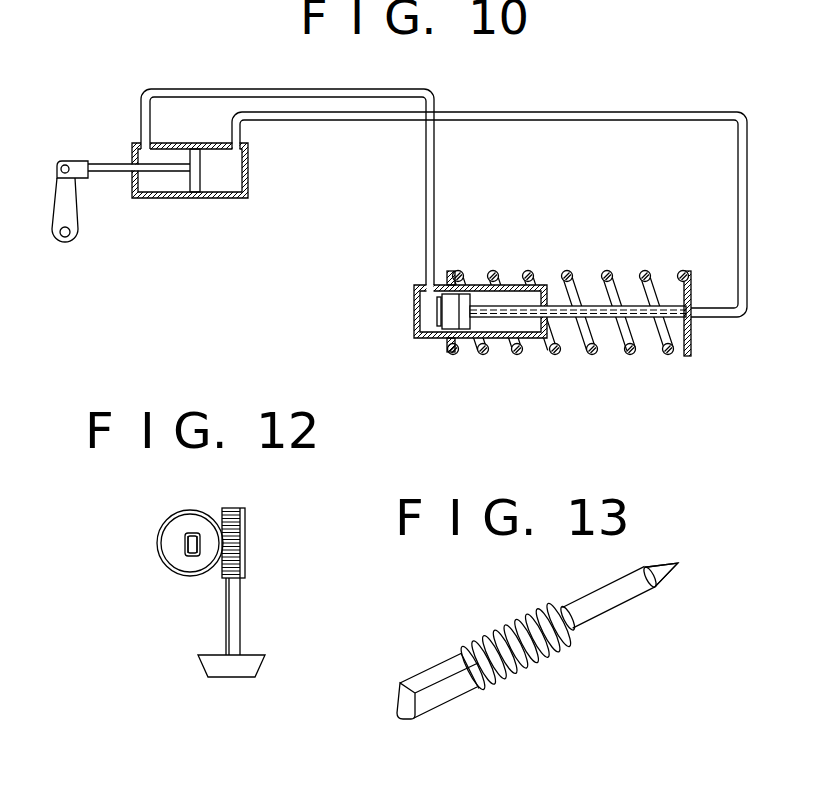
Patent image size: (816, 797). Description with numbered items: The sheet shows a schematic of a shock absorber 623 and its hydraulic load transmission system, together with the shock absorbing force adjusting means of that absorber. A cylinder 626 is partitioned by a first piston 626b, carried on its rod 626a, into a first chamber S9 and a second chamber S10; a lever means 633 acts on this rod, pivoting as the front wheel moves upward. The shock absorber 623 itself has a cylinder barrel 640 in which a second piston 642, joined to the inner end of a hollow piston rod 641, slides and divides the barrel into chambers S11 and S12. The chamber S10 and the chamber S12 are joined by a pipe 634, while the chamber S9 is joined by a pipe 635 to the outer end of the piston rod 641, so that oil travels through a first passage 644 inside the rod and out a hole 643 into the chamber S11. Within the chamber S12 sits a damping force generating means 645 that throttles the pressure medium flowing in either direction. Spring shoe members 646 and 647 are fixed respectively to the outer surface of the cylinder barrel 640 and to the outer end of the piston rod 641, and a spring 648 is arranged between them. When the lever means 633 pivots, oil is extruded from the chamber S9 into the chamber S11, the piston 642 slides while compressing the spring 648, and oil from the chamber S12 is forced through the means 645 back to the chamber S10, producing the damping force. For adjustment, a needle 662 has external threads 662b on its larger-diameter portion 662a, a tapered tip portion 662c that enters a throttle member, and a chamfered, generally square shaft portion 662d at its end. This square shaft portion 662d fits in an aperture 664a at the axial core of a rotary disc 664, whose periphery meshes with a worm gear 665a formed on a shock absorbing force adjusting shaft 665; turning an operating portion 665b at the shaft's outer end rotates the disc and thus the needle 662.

In FIG. 10, the pipe 634 is at (272, 92).
In FIG. 10, the pipe 635 is at (533, 112).
In FIG. 10, the lever means 633 is at (48, 200).
In FIG. 10, the cylinder 626 is at (197, 200).
In FIG. 10, the piston rod 626a is at (110, 172).
In FIG. 10, the piston 626b is at (200, 174).
In FIG. 10, the first chamber S9 is at (240, 165).
In FIG. 10, the second chamber S10 is at (161, 186).
In FIG. 10, the chamber S11 is at (527, 325).
In FIG. 10, the chamber S12 is at (432, 320).
In FIG. 10, the cylinder barrel 640 is at (417, 340).
In FIG. 10, the piston rod 641 is at (607, 346).
In FIG. 10, the piston 642 is at (455, 350).
In FIG. 10, the hole 643 is at (478, 341).
In FIG. 10, the first passage 644 is at (597, 310).
In FIG. 10, the damping force generating means 645 is at (427, 300).
In FIG. 10, the spring shoe member 646 is at (452, 285).
In FIG. 10, the spring shoe member 647 is at (689, 272).
In FIG. 10, the spring 648 is at (608, 273).
In FIG. 10, the shock absorber 623 is at (499, 357).
In FIG. 12, the rotary disc 664 is at (172, 545).
In FIG. 12, the aperture 664a is at (193, 532).
In FIG. 12, the square shaft portion 662d is at (190, 562).
In FIG. 13, the square shaft portion 662d is at (427, 705).
In FIG. 12, the shock absorbing force adjusting shaft 665 is at (237, 612).
In FIG. 12, the worm gear 665a is at (245, 522).
In FIG. 12, the operating portion 665b is at (230, 668).
In FIG. 13, the needle 662 is at (587, 601).
In FIG. 13, the larger-diameter portion 662a is at (478, 695).
In FIG. 13, the external threads 662b is at (512, 630).
In FIG. 13, the tapered tip portion 662c is at (670, 573).